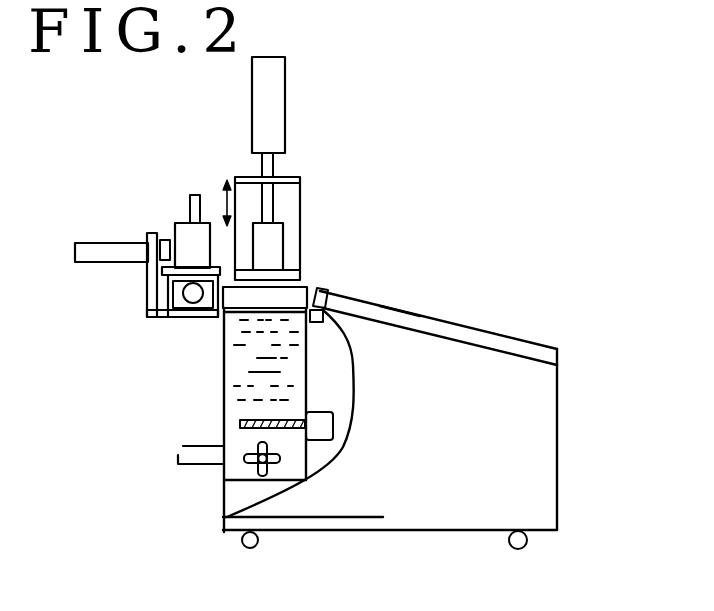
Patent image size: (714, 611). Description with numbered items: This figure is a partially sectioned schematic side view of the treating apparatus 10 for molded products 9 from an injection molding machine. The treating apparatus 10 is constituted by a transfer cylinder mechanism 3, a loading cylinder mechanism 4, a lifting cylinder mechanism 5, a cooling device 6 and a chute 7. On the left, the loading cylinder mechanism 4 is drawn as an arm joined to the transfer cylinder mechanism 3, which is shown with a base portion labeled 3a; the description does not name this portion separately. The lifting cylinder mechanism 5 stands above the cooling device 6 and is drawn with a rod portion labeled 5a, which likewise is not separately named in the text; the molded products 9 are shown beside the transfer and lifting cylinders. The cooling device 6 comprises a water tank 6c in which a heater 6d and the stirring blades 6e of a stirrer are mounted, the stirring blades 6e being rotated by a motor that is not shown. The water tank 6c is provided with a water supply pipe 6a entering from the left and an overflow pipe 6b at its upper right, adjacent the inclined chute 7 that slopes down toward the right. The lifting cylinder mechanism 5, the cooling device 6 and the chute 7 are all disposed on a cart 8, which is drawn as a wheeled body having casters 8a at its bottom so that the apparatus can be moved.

The transfer cylinder mechanism 3 is at (180, 303).
The base plate of cylinder unit 3a is at (175, 272).
The loading cylinder mechanism 4 is at (106, 243).
The lifting cylinder mechanism 5 is at (285, 80).
The piston rod 5a is at (290, 270).
The cooling device 6 is at (225, 392).
The water supply pipe 6a is at (183, 451).
The overflow pipe 6b is at (318, 303).
The water tank 6c is at (297, 383).
The heater 6d is at (283, 432).
The stirring blades 6e is at (252, 466).
The chute 7 is at (470, 326).
The cart 8 is at (540, 420).
The casters 8a is at (258, 540).
The molded products 9 is at (189, 199).
The treating apparatus 10 is at (388, 300).